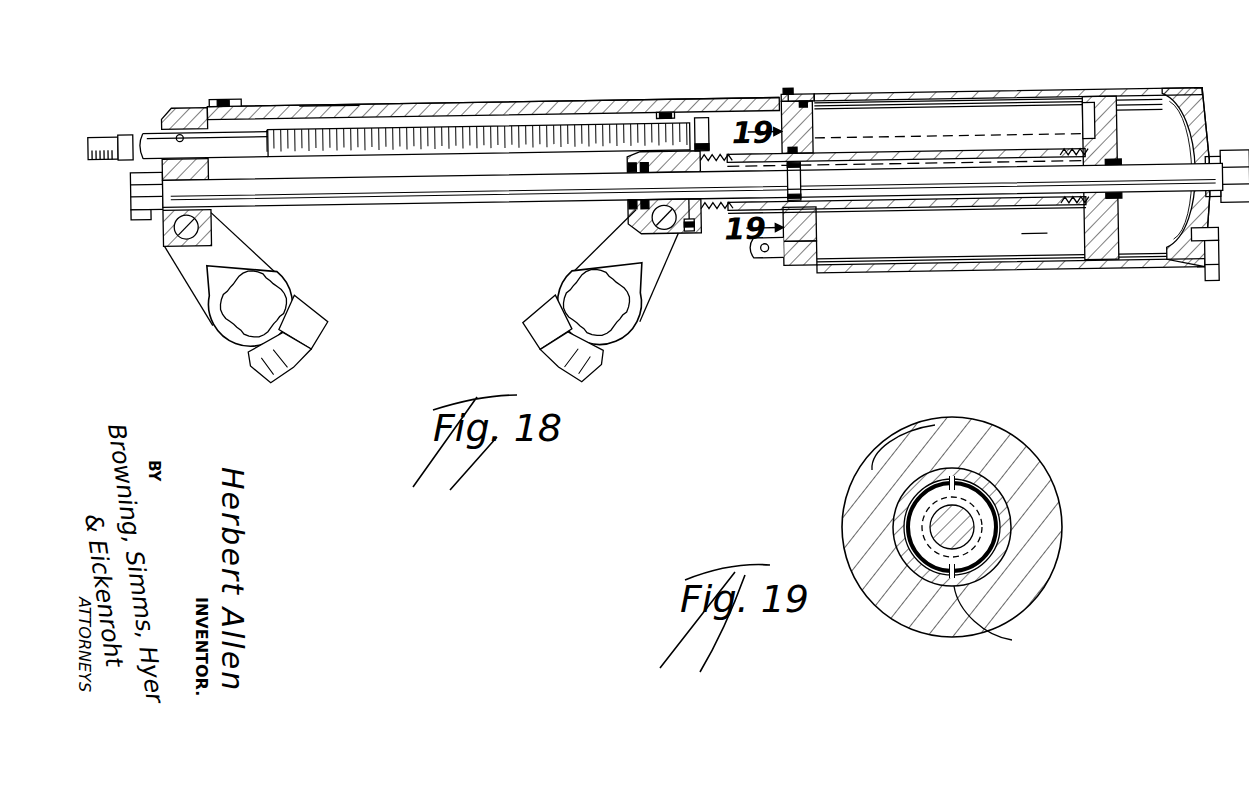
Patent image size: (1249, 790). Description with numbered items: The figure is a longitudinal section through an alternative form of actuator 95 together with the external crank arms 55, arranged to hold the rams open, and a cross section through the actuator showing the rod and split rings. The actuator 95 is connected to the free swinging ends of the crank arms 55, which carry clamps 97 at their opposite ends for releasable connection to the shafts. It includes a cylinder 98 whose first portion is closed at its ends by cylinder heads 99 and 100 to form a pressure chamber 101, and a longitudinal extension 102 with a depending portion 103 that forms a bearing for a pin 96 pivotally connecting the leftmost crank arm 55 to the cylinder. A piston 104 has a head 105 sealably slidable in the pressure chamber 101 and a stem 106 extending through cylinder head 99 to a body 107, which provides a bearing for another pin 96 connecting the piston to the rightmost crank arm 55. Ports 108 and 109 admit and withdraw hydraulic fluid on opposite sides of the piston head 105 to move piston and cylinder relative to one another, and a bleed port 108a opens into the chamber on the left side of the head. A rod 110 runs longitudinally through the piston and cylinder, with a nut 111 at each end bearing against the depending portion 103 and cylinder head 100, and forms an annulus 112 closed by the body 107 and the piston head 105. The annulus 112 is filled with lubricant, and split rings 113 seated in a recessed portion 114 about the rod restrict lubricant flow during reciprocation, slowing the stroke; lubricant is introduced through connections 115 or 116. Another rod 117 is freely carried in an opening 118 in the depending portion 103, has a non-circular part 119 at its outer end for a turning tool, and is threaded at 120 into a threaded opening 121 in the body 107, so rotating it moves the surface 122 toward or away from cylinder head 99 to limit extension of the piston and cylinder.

In FIG. 18, the crank arm 55 is at (188, 290).
In FIG. 18, the actuator 95 is at (402, 106).
In FIG. 18, the pin 96 is at (198, 226).
In FIG. 18, the clamp 97 is at (292, 297).
In FIG. 18, the cylinder 98 is at (1050, 103).
In FIG. 18, the cylinder head 99 is at (815, 232).
In FIG. 19, the cylinder head 99 is at (985, 430).
In FIG. 18, the cylinder head 100 is at (1199, 103).
In FIG. 18, the pressure chamber 101 is at (1034, 223).
In FIG. 18, the longitudinal extension 102 is at (545, 106).
In FIG. 18, the depending portion 103 is at (162, 226).
In FIG. 18, the piston 104 is at (940, 219).
In FIG. 18, the head 105 is at (1190, 272).
In FIG. 18, the stem 106 is at (900, 162).
In FIG. 19, the stem 106 is at (908, 484).
In FIG. 18, the body 107 is at (686, 121).
In FIG. 18, the port 108 is at (800, 274).
In FIG. 18, the bleed port 108a is at (790, 97).
In FIG. 18, the port 109 is at (1186, 242).
In FIG. 18, the rod 110 is at (425, 206).
In FIG. 18, the nut 111 is at (130, 178).
In FIG. 18, the annulus 112 is at (940, 174).
In FIG. 19, the annulus 112 is at (1012, 640).
In FIG. 18, the split ring 113 is at (802, 174).
In FIG. 19, the split ring 113 is at (916, 540).
In FIG. 19, the recessed portion 114 is at (980, 536).
In FIG. 18, the connection 115 is at (1117, 167).
In FIG. 18, the connection 116 is at (690, 240).
In FIG. 18, the rod 117 is at (326, 106).
In FIG. 18, the opening 118 is at (182, 134).
In FIG. 18, the non-circular part 119 is at (110, 134).
In FIG. 18, the threaded portion 120 is at (470, 153).
In FIG. 18, the threaded opening 121 is at (666, 118).
In FIG. 18, the surface 122 is at (712, 126).